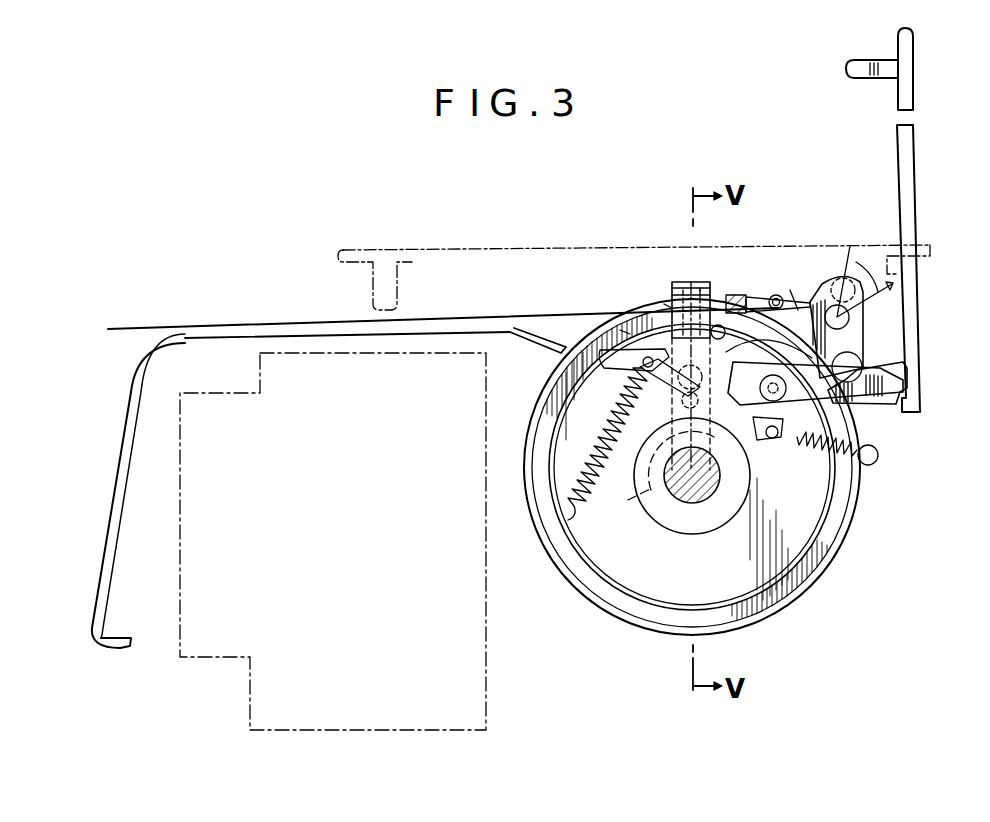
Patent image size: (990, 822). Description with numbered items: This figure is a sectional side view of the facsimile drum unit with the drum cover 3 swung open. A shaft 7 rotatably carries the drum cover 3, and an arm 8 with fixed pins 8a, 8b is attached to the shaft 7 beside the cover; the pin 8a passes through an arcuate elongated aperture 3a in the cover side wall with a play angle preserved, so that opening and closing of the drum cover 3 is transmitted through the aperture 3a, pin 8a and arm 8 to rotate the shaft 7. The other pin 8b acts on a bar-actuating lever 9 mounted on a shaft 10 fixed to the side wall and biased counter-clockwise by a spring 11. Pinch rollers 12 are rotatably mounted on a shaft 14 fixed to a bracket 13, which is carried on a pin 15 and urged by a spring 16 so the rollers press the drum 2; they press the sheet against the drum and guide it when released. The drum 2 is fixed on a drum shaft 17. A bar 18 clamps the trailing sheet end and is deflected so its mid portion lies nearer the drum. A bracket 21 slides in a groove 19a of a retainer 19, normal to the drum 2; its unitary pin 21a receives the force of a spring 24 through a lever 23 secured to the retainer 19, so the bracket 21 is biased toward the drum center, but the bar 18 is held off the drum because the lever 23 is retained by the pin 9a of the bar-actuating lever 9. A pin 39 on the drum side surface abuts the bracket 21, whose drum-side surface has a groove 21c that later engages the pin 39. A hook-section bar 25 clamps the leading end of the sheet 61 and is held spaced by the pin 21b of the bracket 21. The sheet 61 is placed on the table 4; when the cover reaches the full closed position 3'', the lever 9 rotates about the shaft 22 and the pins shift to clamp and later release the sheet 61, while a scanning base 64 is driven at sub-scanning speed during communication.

The drum 2 is at (850, 518).
The drum cover 3 is at (894, 220).
The full closed position of drum cover 3'' is at (634, 256).
The elongated aperture 3a is at (850, 320).
The table 4 is at (138, 396).
The shaft 7 is at (852, 268).
The arm 8 is at (864, 345).
The pin 8a is at (841, 300).
The pin 8b is at (858, 384).
The bar-actuating lever 9 is at (905, 388).
The pin 9a is at (655, 388).
The shaft 10 is at (780, 396).
The spring 11 is at (812, 452).
The pinch roller 12 is at (768, 322).
The bracket 13 is at (752, 300).
The shaft 14 is at (722, 302).
The pin 15 is at (786, 290).
The spring 16 is at (791, 290).
The drum shaft 17 is at (718, 492).
The bar 18 is at (672, 292).
The retainer 19 is at (810, 558).
The groove 19a is at (640, 493).
The bracket 21 is at (670, 300).
The pin 21a is at (620, 322).
The pin 21b is at (728, 458).
The groove 21c is at (697, 286).
The shaft 22 is at (787, 388).
The lever 23 is at (636, 346).
The spring 24 is at (600, 425).
The bar 25 is at (668, 312).
The pin 39 is at (730, 297).
The sheet 61 is at (140, 329).
The scanning base 64 is at (482, 672).